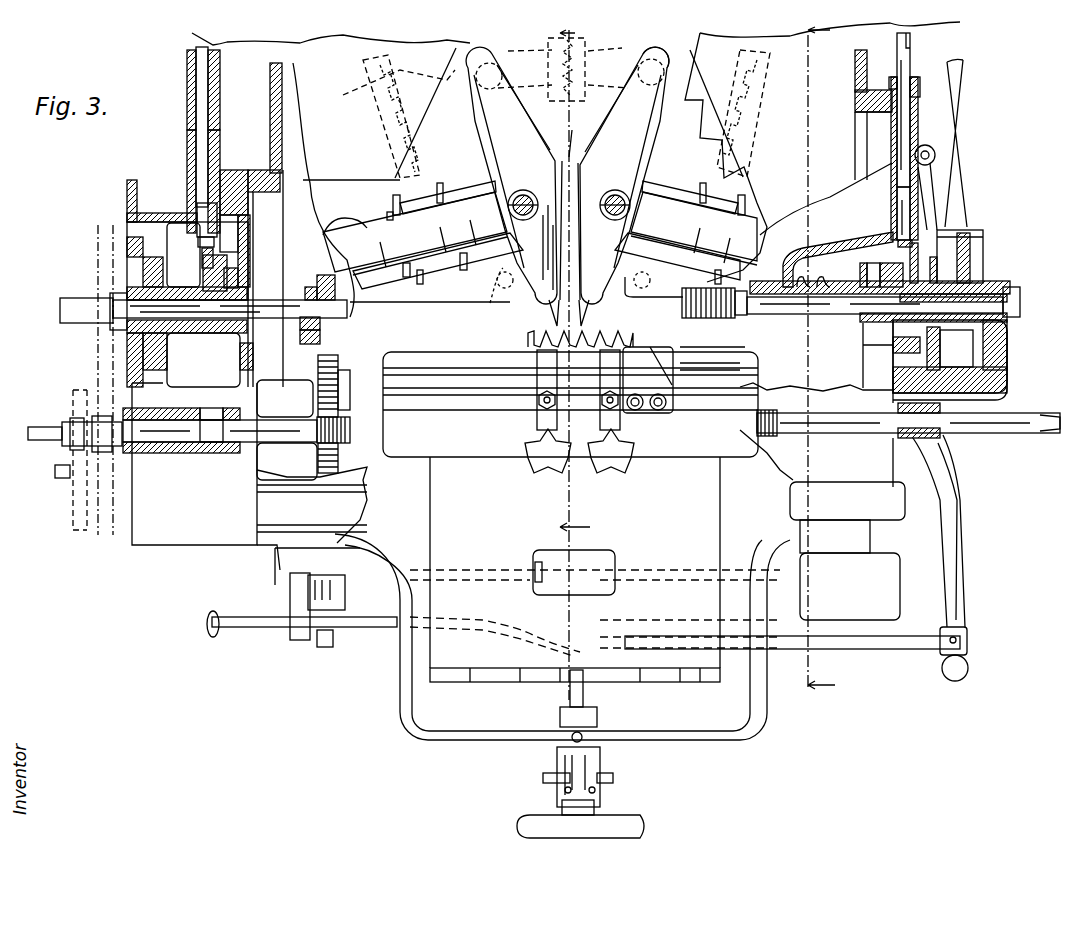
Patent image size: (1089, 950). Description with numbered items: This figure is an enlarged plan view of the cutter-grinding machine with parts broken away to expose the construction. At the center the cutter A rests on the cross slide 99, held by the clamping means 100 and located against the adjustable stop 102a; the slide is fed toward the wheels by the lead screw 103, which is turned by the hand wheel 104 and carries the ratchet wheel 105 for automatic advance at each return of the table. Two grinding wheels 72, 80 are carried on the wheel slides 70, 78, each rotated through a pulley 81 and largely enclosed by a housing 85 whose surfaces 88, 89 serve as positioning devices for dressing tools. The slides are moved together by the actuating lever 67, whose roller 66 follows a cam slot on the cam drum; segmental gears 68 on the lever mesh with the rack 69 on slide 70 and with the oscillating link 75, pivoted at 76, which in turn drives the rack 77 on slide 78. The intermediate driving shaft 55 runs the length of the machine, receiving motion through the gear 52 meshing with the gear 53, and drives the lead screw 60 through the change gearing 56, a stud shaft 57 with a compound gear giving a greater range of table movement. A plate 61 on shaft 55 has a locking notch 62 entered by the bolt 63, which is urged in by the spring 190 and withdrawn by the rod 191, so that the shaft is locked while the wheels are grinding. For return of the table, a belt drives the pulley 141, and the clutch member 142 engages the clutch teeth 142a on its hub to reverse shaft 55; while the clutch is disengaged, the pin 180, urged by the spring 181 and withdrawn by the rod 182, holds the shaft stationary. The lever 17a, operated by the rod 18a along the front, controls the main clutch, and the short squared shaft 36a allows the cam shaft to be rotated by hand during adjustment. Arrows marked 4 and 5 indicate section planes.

The rod 191 is at (190, 90).
The spring 190 is at (188, 158).
The bolt 63 is at (201, 255).
The locking notch 62 is at (203, 282).
The plate 61 is at (224, 283).
The intermediate driving shaft 55 is at (277, 300).
The lead screw 60 is at (283, 423).
The gear 52 is at (320, 352).
The gear 53 is at (312, 331).
The change gearing 56 is at (97, 348).
The stud shaft 57 is at (55, 470).
The slide 99 is at (440, 517).
The clamping means 100 is at (540, 424).
The cutter A is at (636, 345).
The adjustable stop 102a is at (668, 377).
The section line 5- 5 is at (581, 362).
The section line 4- 4 is at (827, 358).
The grinding wheel 72 is at (551, 318).
The cutting wheel 80 is at (590, 318).
The pivot 76 is at (648, 50).
The actuating lever 67 is at (561, 157).
The housing 85 is at (606, 125).
The positioning surface 88 is at (518, 192).
The positioning surface 89 is at (616, 192).
The pulley 81 is at (410, 190).
The wheel slide 70 is at (473, 280).
The roller 66 is at (505, 292).
The wheel slide 78 is at (648, 300).
The rack 69 is at (383, 135).
The segmental gears 68 is at (400, 72).
The segmental gear link 75 is at (600, 52).
The rack 77 is at (770, 92).
The rod 182 is at (911, 65).
The spring 181 is at (892, 136).
The pin 180 is at (898, 226).
The lever 17a is at (950, 506).
The pulley 141 is at (980, 259).
The clutch member 142 is at (903, 350).
The clutch teeth 142a is at (1007, 360).
The rod 18a is at (900, 652).
The short squared shaft 36a is at (318, 646).
The lead screw 103 is at (586, 690).
The ratchet wheel 105 is at (615, 778).
The hand wheel 104 is at (636, 826).